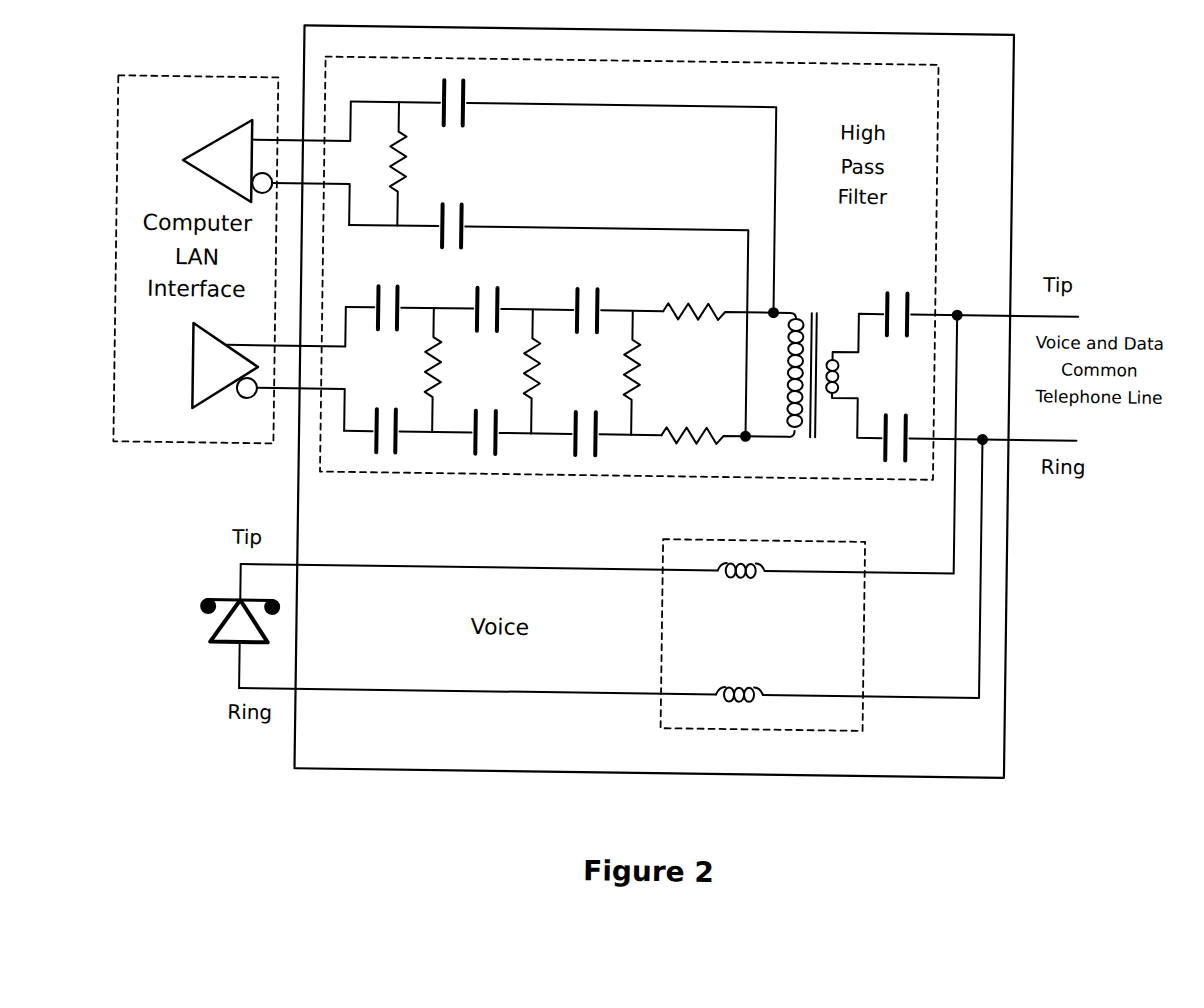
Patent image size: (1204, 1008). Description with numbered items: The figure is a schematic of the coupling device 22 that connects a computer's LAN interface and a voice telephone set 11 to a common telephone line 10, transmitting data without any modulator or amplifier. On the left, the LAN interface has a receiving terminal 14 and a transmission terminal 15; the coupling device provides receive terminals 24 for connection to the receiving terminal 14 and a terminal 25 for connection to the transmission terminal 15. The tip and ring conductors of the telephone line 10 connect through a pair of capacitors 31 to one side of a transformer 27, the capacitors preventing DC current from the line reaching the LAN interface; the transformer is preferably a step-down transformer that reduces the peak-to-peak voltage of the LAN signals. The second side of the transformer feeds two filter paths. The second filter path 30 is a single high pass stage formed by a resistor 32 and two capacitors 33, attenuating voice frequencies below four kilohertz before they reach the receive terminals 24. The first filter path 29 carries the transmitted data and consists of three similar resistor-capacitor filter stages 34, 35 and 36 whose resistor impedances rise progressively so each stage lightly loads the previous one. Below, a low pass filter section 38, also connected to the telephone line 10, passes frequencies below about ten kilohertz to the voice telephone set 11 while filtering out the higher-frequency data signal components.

The common telephone line 10 is at (1094, 434).
The voice telephone set 11 is at (211, 643).
The receiving terminal 14 is at (190, 156).
The transmission terminal 15 is at (192, 372).
The coupling device 22 is at (1009, 97).
The receive terminals 24 is at (261, 140).
The terminal 25 is at (268, 395).
The transformer 27 is at (818, 426).
The first filter path 29 is at (664, 437).
The second filter path 30 is at (761, 102).
The capacitors 31 is at (875, 281).
The resistor 32 is at (409, 153).
The capacitors 33 is at (455, 201).
The filter stage 34 is at (399, 461).
The filter stage 35 is at (488, 460).
The filter stage 36 is at (588, 459).
The low pass filter section 38 is at (664, 705).